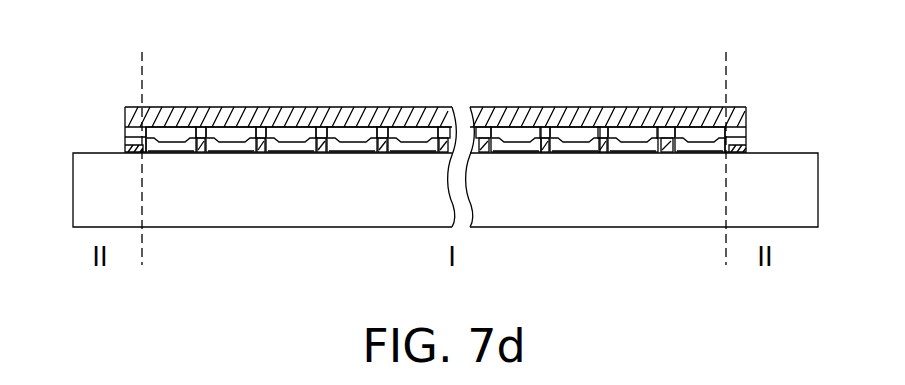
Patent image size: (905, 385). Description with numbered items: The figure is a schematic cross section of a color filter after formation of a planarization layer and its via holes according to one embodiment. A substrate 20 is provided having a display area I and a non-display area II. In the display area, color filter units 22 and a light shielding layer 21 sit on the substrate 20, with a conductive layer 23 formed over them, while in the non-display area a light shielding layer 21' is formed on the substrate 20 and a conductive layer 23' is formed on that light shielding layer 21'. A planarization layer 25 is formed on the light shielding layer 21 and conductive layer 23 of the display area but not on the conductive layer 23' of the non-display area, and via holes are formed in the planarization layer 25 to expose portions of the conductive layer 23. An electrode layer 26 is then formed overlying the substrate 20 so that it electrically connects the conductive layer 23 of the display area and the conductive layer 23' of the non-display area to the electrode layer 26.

The substrate 20 is at (263, 212).
The light shielding layer 21 is at (435, 210).
The light shielding layer 21' is at (434, 127).
The color filter units 22 is at (172, 152).
The conductive layer 23 is at (439, 86).
The conductive layer 23' is at (440, 103).
The planarization layer 25 is at (226, 135).
The electrode layer 26 is at (290, 110).